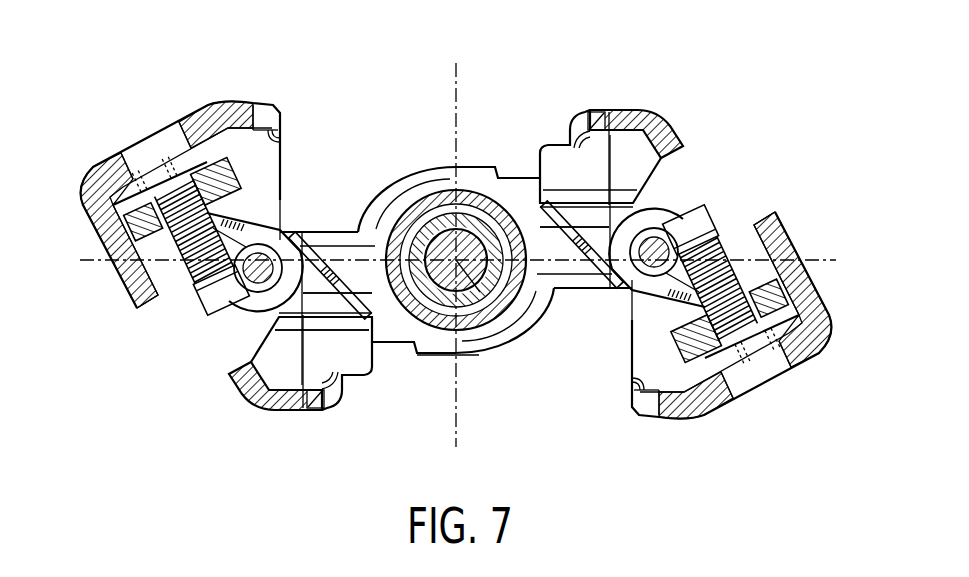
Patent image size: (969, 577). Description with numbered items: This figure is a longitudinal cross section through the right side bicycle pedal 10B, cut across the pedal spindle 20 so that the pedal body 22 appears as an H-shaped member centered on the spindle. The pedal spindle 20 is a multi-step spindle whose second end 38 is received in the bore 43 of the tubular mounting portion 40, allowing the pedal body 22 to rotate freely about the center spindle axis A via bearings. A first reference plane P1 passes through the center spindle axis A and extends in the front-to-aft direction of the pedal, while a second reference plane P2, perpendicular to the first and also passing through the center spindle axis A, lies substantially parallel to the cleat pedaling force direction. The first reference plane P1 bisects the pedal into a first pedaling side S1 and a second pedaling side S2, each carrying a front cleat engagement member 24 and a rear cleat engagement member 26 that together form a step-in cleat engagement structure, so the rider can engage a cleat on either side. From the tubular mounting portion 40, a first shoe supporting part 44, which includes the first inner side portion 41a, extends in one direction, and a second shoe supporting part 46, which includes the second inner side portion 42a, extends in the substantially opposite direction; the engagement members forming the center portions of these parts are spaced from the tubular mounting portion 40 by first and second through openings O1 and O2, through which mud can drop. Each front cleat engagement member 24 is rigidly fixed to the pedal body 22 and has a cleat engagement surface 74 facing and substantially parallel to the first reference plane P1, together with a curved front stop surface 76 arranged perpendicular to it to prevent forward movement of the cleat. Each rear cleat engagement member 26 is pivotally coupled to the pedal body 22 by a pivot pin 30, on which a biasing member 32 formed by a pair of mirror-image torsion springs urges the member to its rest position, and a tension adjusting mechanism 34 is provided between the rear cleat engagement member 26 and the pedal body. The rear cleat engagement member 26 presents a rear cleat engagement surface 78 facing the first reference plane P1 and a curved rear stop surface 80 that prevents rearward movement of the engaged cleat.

The right side bicycle pedal 10B is at (728, 120).
The pedal spindle 20 is at (476, 342).
The pedal body 22 is at (440, 163).
The front cleat engagement member 24 is at (632, 105).
The rear cleat engagement member 26 is at (205, 103).
The pivot pin 30 is at (273, 231).
The biasing member 32 is at (282, 226).
The tension adjusting mechanism 34 is at (193, 300).
The second end 38 is at (428, 228).
The tubular mounting portion 40 is at (497, 177).
The first inner side portion 41a is at (600, 292).
The second inner side portion 42a is at (345, 335).
The bore 43 is at (440, 342).
The first shoe supporting part 44 is at (788, 190).
The second shoe supporting part 46 is at (115, 150).
The cleat engagement surface 74 is at (560, 127).
The curved front stop surface 76 is at (598, 110).
The rear cleat engagement surface 78 is at (270, 137).
The curved rear stop surface 80 is at (252, 103).
The center spindle axis A is at (468, 297).
The first through opening O1 is at (560, 266).
The second through opening O2 is at (342, 238).
The first reference plane P1 is at (827, 260).
The second reference plane P2 is at (460, 100).
The first pedaling side S1 is at (378, 145).
The second pedaling side S2 is at (413, 387).